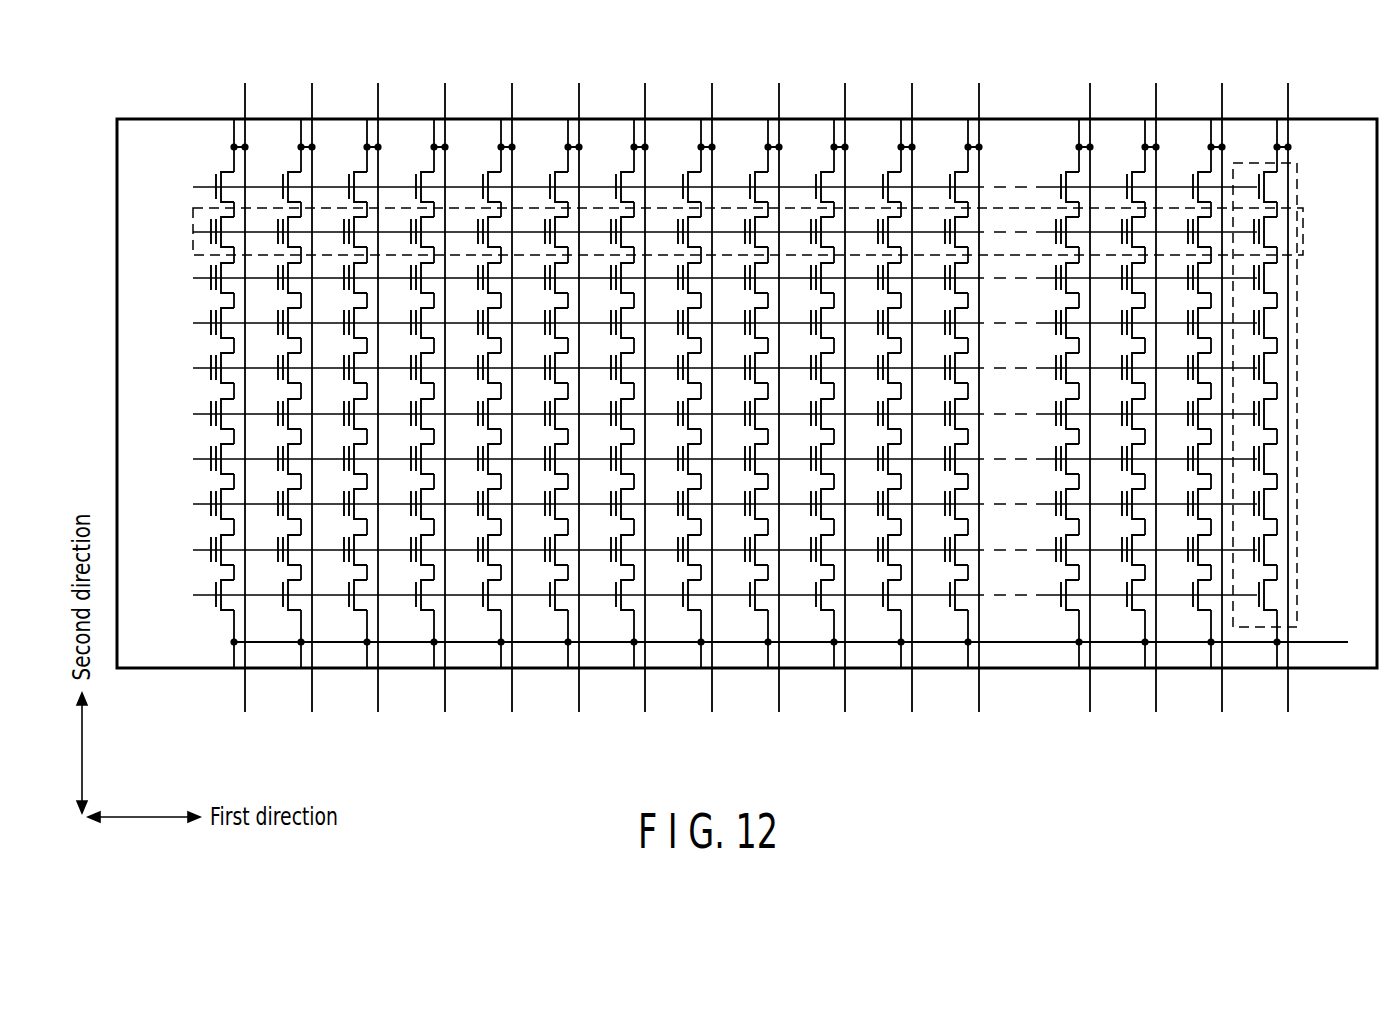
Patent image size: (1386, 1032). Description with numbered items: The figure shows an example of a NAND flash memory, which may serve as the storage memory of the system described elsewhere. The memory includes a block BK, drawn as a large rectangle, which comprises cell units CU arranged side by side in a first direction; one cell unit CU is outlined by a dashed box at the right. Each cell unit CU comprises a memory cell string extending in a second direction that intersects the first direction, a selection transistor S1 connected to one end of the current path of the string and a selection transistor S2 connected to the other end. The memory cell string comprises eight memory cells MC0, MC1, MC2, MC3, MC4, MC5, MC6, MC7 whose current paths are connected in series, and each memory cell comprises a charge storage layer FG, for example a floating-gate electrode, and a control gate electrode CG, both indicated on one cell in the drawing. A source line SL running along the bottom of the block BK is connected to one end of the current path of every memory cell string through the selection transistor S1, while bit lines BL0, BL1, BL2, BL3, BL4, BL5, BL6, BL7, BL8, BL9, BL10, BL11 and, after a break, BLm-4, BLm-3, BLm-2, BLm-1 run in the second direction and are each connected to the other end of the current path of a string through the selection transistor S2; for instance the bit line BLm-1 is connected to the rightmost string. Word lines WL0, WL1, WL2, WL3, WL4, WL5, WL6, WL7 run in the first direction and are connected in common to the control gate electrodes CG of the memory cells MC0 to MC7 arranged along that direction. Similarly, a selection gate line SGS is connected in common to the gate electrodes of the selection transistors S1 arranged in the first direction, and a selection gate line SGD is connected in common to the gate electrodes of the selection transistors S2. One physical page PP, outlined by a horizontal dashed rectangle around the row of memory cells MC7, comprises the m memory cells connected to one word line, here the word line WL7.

The block BK is at (1036, 118).
The physical page PP is at (521, 208).
The cell unit CU is at (1290, 166).
The selection transistor S1 is at (1273, 592).
The selection transistor S2 is at (1273, 184).
The memory cell MC0 is at (1273, 547).
The memory cell MC1 is at (1273, 501).
The memory cell MC2 is at (1273, 456).
The memory cell MC3 is at (1273, 411).
The memory cell MC4 is at (1273, 365).
The memory cell MC5 is at (1273, 320).
The memory cell MC6 is at (1273, 275).
The memory cell MC7 is at (1273, 229).
The control gate electrode CG is at (1055, 332).
The charge storage layer FG is at (1062, 340).
The source line SL is at (1318, 646).
The selection gate line SGD is at (700, 187).
The selection gate line SGS is at (700, 595).
The word line WL0 is at (700, 550).
The word line WL1 is at (700, 504).
The word line WL2 is at (700, 459).
The word line WL3 is at (700, 414).
The word line WL4 is at (700, 368).
The word line WL5 is at (700, 323).
The word line WL6 is at (700, 278).
The word line WL7 is at (700, 232).
The bit line BL0 is at (237, 380).
The bit line BL1 is at (304, 380).
The bit line BL2 is at (370, 380).
The bit line BL3 is at (437, 380).
The bit line BL4 is at (504, 380).
The bit line BL5 is at (571, 380).
The bit line BL6 is at (637, 380).
The bit line BL7 is at (704, 380).
The bit line BL8 is at (771, 380).
The bit line BL9 is at (837, 380).
The bit line BL10 is at (907, 380).
The bit line BL11 is at (973, 380).
The bit line BLm-4 is at (1089, 380).
The bit line BLm-3 is at (1155, 380).
The bit line BLm-2 is at (1221, 380).
The bit line BLm-1 is at (1288, 380).